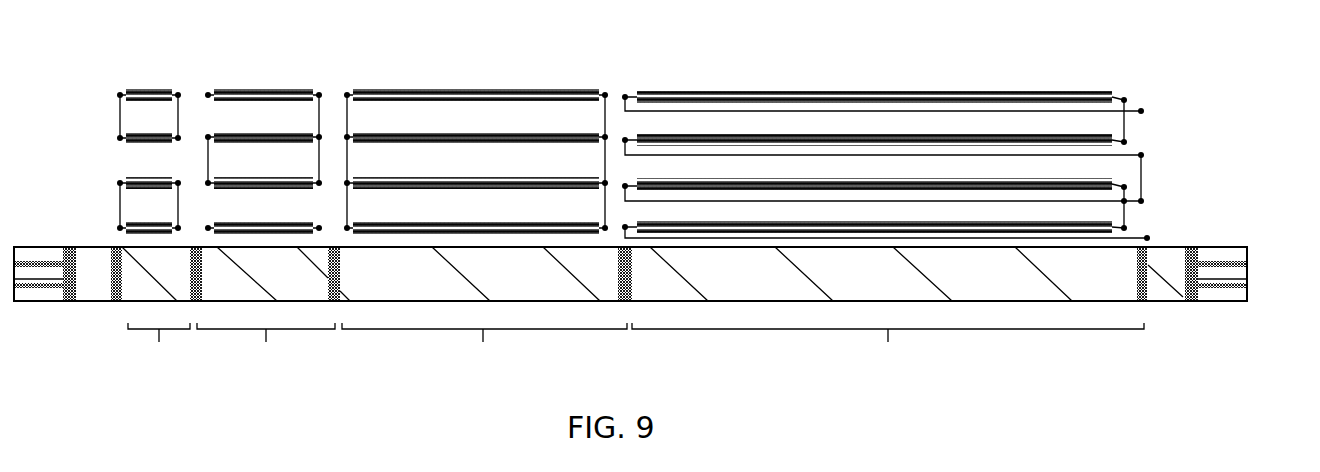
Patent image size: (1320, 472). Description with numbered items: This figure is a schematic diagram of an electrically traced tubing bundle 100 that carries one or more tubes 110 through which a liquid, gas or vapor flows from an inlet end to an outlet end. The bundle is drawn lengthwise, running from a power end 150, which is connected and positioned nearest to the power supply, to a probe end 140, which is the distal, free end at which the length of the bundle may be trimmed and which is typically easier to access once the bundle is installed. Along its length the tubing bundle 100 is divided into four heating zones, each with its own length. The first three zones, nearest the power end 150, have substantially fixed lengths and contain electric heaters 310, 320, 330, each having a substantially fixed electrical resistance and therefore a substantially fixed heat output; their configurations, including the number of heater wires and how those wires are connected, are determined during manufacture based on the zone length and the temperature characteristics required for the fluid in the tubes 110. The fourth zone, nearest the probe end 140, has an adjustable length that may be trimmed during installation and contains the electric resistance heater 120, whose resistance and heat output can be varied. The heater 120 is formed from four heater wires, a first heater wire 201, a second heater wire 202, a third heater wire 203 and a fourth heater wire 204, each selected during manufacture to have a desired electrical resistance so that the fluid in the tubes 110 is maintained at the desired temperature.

The tubing bundle 100 is at (90, 190).
The tubes 110 is at (1247, 247).
The electric resistance heater 120 is at (625, 60).
The probe end 140 is at (1177, 301).
The power end 150 is at (93, 301).
The first heater wire 201 is at (1112, 95).
The second heater wire 202 is at (1112, 137).
The third heater wire 203 is at (1112, 183).
The fourth heater wire 204 is at (1112, 227).
The electric heater 310 is at (113, 60).
The electric heater 320 is at (197, 60).
The electric heater 330 is at (344, 60).